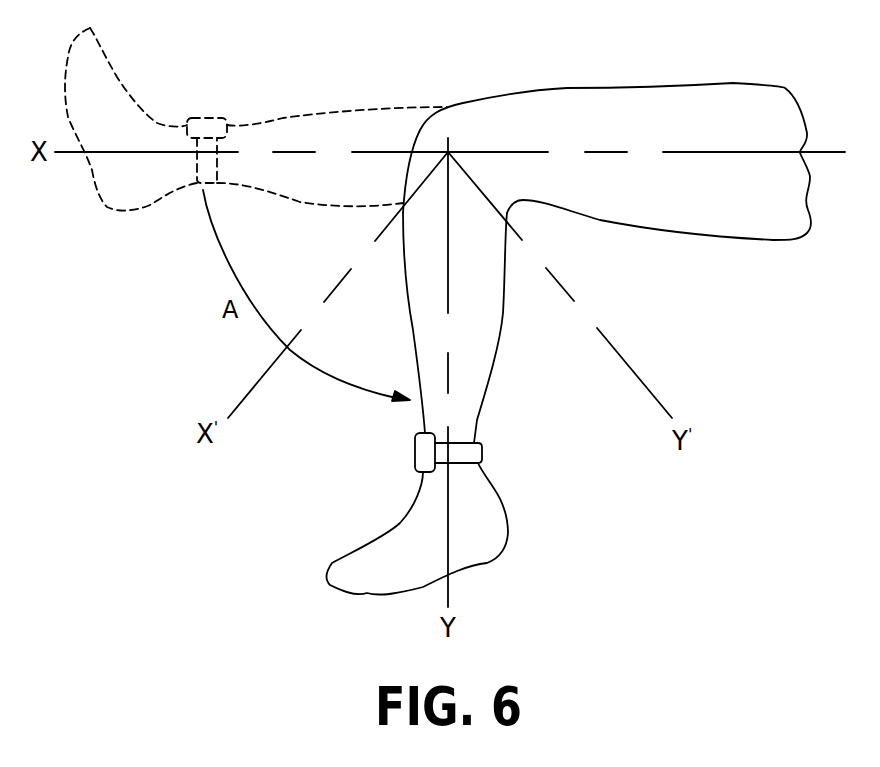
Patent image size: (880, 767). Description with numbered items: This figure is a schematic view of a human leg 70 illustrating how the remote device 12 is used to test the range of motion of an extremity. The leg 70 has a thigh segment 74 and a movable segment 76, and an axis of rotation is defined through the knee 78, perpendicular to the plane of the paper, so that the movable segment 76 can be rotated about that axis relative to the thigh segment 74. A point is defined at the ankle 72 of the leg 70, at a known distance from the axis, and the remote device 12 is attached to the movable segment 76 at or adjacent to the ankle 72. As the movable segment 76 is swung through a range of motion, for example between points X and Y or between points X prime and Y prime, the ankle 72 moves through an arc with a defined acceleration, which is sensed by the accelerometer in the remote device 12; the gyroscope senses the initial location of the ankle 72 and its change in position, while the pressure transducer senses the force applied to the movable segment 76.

The leg 70 is at (451, 79).
The thigh segment 74 is at (623, 105).
The knee 78 is at (472, 138).
The movable segment 76 is at (480, 300).
The ankle 72 is at (467, 433).
The remote device 12 is at (425, 453).